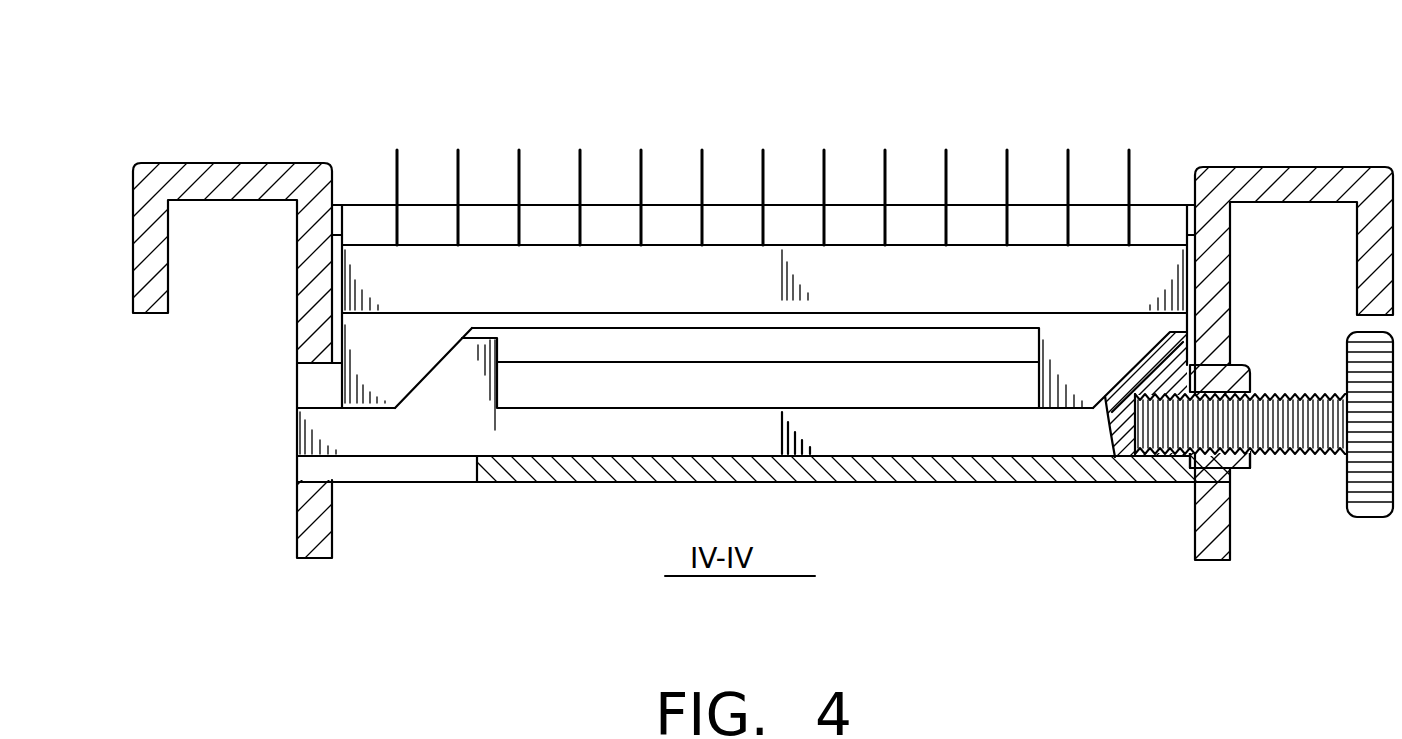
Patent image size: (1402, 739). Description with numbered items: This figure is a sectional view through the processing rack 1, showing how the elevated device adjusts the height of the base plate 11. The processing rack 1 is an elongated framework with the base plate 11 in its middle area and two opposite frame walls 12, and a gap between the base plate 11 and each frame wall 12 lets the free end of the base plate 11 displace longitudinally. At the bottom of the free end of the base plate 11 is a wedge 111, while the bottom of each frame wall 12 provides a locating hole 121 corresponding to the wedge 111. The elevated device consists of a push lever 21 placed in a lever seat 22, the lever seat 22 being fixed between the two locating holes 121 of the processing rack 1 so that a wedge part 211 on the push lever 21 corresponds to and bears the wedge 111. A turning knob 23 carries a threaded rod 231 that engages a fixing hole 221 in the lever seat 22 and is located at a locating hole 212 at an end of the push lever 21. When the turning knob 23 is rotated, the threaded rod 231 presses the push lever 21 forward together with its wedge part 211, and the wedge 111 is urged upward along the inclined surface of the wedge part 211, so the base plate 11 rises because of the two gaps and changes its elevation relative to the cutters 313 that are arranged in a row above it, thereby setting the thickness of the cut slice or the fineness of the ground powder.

The processing rack 1 is at (312, 150).
The base plate 11 is at (609, 200).
The wedge 111 is at (391, 358).
The frame wall 12 is at (241, 180).
The locating hole 121 is at (1208, 353).
The push lever 21 is at (940, 440).
The wedge part 211 is at (430, 376).
The locating hole 212 is at (1147, 458).
The lever seat 22 is at (555, 467).
The fixing hole 221 is at (1213, 456).
The turning knob 23 is at (1373, 508).
The threaded rod 231 is at (1322, 436).
The cutter 313 is at (768, 172).